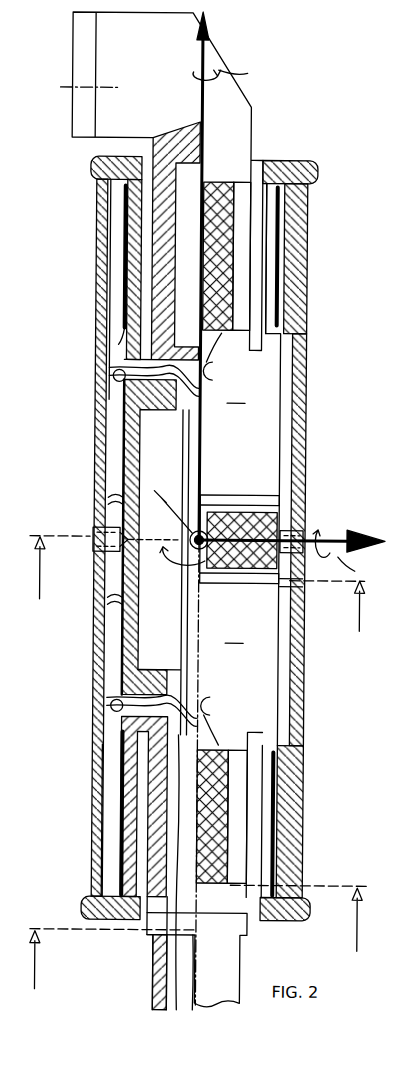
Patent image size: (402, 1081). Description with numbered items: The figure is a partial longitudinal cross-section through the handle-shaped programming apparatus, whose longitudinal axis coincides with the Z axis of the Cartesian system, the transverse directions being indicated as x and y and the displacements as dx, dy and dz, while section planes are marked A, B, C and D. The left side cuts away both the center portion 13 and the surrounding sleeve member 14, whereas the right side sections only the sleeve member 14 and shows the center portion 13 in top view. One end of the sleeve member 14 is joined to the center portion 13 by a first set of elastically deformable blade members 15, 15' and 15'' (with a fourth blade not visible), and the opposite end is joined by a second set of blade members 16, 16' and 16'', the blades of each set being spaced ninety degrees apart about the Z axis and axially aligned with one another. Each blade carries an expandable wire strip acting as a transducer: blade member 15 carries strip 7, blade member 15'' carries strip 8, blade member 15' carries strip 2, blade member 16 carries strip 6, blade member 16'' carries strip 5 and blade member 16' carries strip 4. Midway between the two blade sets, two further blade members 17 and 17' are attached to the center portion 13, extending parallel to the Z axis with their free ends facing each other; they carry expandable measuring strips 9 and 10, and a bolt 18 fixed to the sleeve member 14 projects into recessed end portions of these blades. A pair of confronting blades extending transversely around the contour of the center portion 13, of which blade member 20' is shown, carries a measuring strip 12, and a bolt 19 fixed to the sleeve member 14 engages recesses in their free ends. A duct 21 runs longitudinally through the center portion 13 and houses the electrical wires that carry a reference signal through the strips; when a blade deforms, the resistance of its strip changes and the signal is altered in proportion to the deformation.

The expanding strip 2 is at (223, 837).
The expanding strip 4 is at (225, 292).
The expanding strip 5 is at (278, 270).
The expanding strip 6 is at (130, 300).
The expanding strip 7 is at (130, 845).
The expanding strip 8 is at (300, 812).
The expandable measuring strip 9 is at (122, 455).
The expandable measuring strip 10 is at (126, 645).
The expandable wire measuring strip 12 is at (296, 490).
The center portion 13 is at (242, 134).
The sleeve member 14 is at (96, 410).
The blade member 15 is at (222, 795).
The blade member 15' is at (306, 825).
The blade member 15'' is at (303, 822).
The blade member 16 is at (91, 265).
The blade member 16' is at (312, 257).
The blade member 16'' is at (312, 259).
The blade member 17 is at (87, 502).
The blade member 17' is at (86, 605).
The bolt 18 is at (92, 546).
The bolt 19 is at (303, 530).
The blade member 20' is at (311, 599).
The duct 21 is at (150, 930).
The x axis x is at (367, 518).
The y axis y is at (173, 512).
The x displacement dx is at (357, 569).
The y displacement dy is at (156, 594).
The z displacement dz is at (244, 72).
The section plane A is at (51, 568).
The section plane B is at (335, 606).
The section plane C is at (102, 959).
The section plane D is at (303, 918).